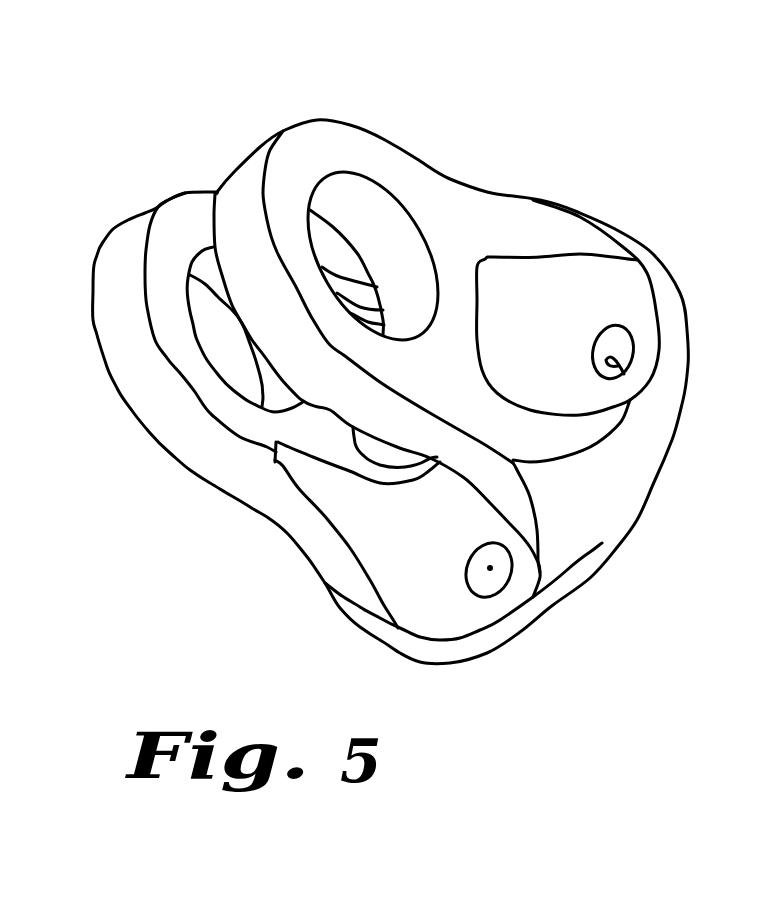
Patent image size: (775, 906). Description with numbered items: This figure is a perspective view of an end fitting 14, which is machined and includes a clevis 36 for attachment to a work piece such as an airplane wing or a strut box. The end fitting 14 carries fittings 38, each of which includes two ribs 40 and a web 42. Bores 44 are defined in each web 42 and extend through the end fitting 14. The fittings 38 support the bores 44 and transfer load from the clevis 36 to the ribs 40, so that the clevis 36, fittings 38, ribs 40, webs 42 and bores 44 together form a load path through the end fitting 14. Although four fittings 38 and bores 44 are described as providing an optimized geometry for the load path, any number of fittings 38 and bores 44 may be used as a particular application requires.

The end fitting 14 is at (465, 117).
The clevis 36 is at (197, 173).
The fitting 38 is at (665, 319).
The rib 40 is at (552, 223).
The web 42 is at (625, 300).
The bore 44 is at (618, 378).